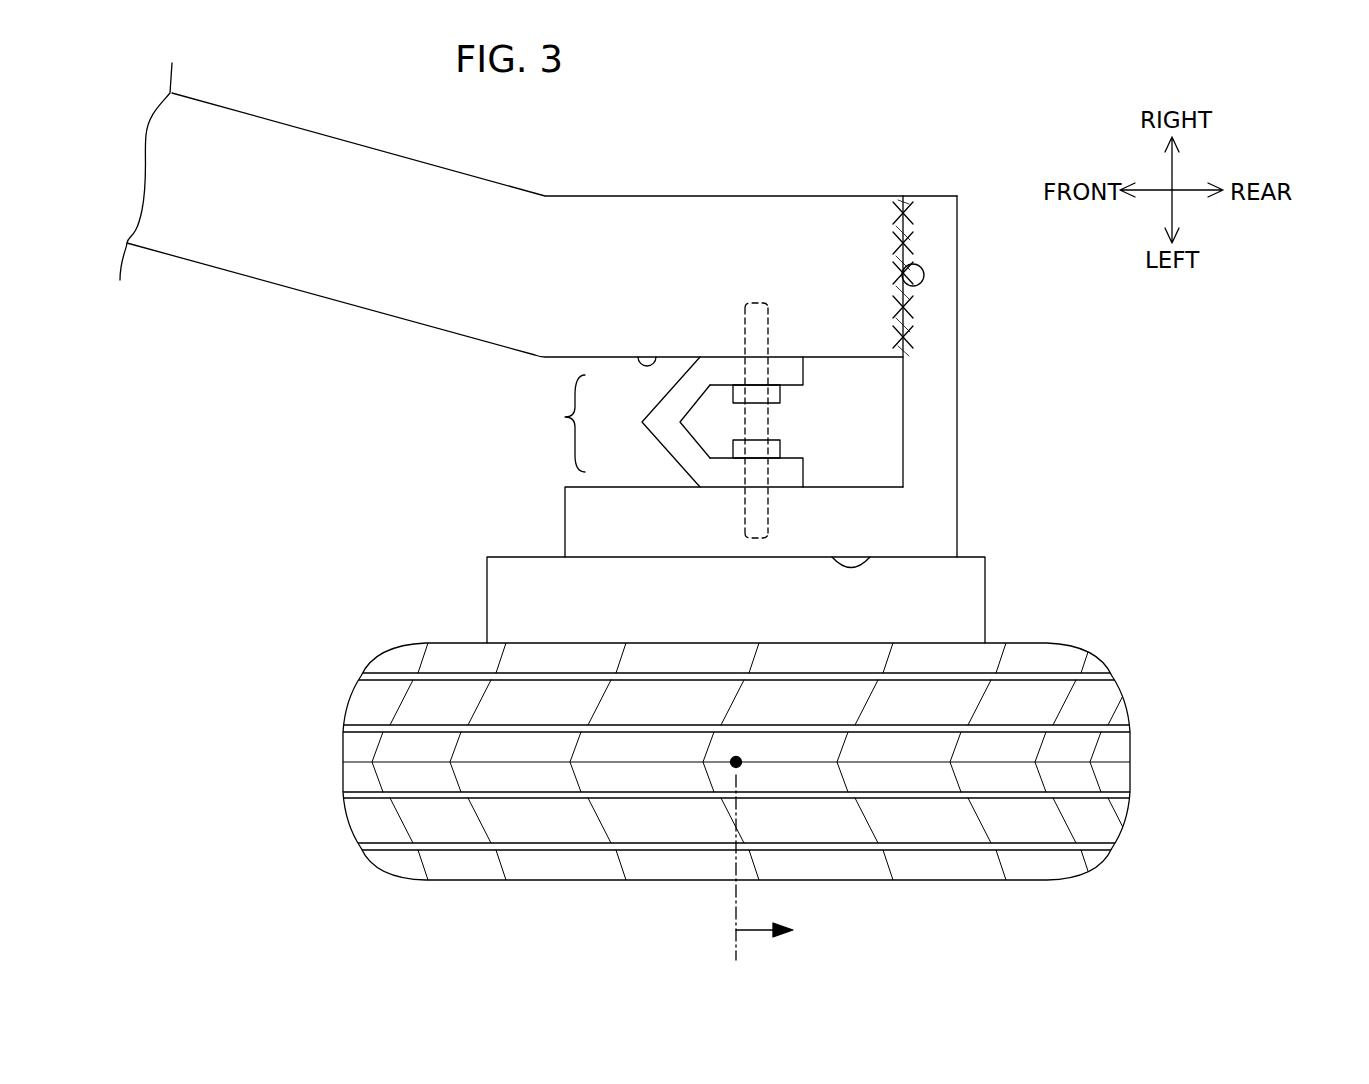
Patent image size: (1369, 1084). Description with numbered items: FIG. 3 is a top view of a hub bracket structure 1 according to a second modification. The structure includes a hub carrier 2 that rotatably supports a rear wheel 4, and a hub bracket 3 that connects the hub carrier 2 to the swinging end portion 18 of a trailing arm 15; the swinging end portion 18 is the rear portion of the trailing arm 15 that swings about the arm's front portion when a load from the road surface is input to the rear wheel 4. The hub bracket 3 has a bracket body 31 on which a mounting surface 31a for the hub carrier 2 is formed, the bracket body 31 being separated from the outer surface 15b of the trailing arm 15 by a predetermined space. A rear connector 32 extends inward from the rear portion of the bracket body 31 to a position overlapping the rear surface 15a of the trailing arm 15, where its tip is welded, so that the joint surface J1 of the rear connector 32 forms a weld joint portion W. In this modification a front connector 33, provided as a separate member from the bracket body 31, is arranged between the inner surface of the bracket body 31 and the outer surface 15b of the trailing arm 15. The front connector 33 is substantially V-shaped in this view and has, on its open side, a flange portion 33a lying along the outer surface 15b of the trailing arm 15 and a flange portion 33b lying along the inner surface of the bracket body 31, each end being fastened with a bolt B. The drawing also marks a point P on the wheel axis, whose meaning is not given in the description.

The hub bracket structure 1 is at (1072, 403).
The hub carrier 2 is at (985, 603).
The hub bracket 3 is at (565, 423).
The rear wheel 4 is at (1118, 692).
The trailing arm 15 is at (828, 196).
The rear surface of the trailing arm 15a is at (893, 290).
The outer surface of the trailing arm 15b is at (640, 350).
The swinging end portion 18 is at (758, 155).
The bracket body 31 is at (612, 523).
The mounting surface 31a is at (870, 557).
The rear connector 32 is at (923, 428).
The front connector 33 is at (690, 392).
The flange portion 33a is at (792, 368).
The flange portion 33b is at (793, 473).
The bolt B is at (782, 396).
The weld joint portion W is at (940, 233).
The joint surface J1 is at (913, 323).
The pivot axis P is at (731, 766).